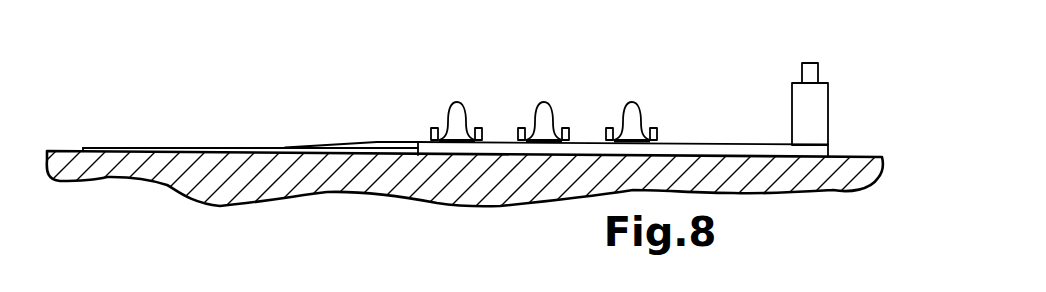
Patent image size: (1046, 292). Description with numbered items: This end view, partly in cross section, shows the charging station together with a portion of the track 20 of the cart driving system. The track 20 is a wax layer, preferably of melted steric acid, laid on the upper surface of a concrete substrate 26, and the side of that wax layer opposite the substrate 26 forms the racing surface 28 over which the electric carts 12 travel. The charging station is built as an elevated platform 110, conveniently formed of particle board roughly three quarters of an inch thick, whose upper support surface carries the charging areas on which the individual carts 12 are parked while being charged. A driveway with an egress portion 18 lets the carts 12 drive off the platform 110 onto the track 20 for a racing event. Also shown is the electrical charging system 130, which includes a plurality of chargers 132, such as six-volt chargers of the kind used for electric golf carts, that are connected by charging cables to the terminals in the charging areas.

The electric carts 12 is at (458, 98).
The egress portion 18 is at (378, 150).
The track 20 is at (163, 147).
The concrete substrate 26 is at (328, 190).
The racing surface 28 is at (125, 147).
The elevated platform 110 is at (694, 145).
The electrical charging system 130 is at (828, 65).
The chargers 132 is at (807, 63).